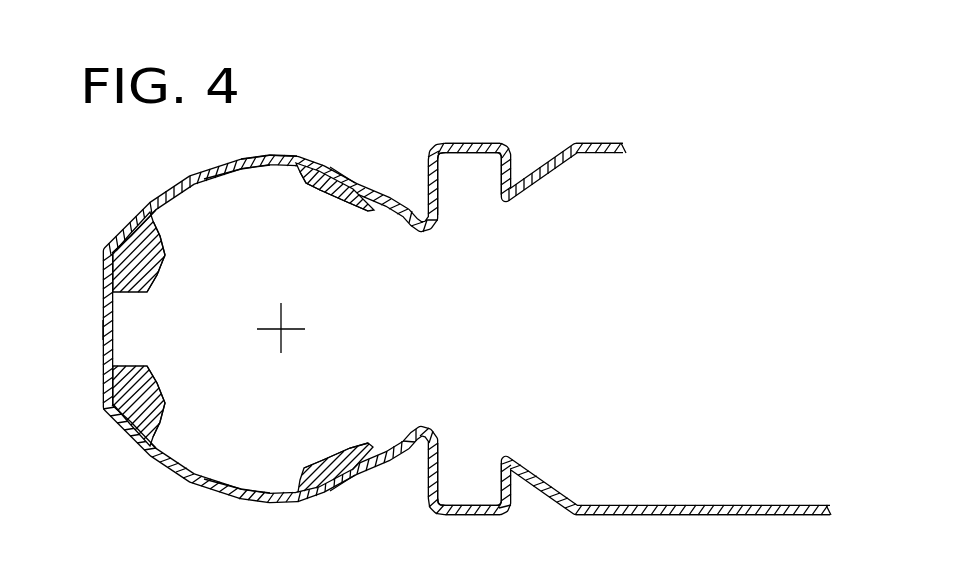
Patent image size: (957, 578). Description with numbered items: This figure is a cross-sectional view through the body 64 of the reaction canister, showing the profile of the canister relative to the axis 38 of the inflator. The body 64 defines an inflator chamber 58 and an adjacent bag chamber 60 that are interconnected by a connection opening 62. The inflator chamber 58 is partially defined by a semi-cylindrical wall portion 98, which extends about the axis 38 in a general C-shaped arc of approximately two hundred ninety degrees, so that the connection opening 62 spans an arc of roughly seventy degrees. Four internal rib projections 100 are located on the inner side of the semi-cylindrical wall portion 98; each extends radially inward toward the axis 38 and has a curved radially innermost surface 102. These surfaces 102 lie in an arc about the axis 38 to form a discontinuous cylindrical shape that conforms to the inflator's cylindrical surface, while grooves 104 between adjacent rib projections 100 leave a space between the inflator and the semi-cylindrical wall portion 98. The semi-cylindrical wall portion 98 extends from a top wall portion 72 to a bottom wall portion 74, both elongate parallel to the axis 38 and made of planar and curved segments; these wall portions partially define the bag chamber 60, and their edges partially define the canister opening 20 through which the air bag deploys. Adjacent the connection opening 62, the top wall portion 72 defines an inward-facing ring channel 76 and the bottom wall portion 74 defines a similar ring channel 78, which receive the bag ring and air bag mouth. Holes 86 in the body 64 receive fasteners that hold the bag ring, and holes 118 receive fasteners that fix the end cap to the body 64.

The canister opening 20 is at (659, 212).
The axis 38 is at (285, 327).
The inflator chamber 58 is at (267, 288).
The bag chamber 60 is at (642, 343).
The connection opening 62 is at (420, 297).
The body 64 is at (150, 196).
The top wall portion 72 is at (593, 147).
The bottom wall portion 74 is at (712, 508).
The ring channel 76 is at (470, 190).
The ring channel 78 is at (471, 470).
The holes 86 is at (465, 146).
The semi-cylindrical wall portion 98 is at (255, 150).
The rib projections 100 is at (318, 160).
The radially innermost surface 102 is at (316, 186).
The grooves 104 is at (216, 189).
The holes 118 is at (348, 155).